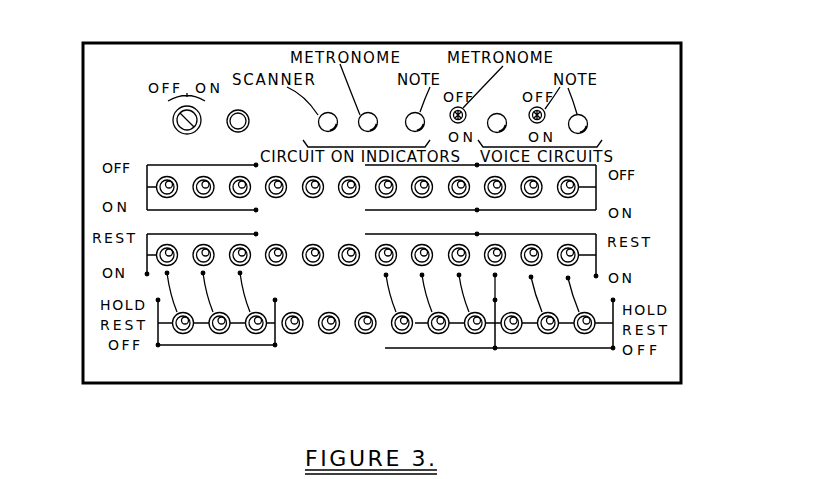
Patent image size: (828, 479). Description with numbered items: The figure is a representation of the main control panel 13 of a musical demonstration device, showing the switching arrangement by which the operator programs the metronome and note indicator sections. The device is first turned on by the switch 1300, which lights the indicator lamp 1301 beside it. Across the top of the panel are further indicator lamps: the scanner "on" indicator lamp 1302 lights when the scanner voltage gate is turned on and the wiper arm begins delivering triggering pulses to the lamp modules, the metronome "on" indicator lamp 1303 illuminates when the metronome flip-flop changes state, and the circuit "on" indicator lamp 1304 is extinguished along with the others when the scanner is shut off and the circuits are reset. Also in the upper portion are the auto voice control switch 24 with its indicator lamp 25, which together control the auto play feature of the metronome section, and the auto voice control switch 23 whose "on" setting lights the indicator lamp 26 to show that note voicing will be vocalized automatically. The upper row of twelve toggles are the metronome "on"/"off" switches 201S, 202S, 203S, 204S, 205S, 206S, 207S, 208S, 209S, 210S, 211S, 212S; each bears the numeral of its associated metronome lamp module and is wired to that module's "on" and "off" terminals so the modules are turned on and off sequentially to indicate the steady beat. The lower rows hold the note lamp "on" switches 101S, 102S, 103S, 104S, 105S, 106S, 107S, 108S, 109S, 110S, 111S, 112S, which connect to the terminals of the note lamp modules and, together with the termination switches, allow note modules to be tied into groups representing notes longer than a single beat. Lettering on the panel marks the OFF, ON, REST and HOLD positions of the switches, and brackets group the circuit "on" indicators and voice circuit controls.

The main control panel 13 is at (681, 153).
The switch 1300 is at (186, 104).
The indicator lamp 1301 is at (235, 110).
The scanner "on" indicator lamp 1302 is at (318, 120).
The metronome "on" indicator lamp 1303 is at (359, 116).
The circuit "on" indicator lamp 1304 is at (418, 112).
The auto voice control switch 23 is at (546, 108).
The auto voice control switch 24 is at (466, 112).
The indicator lamp 25 is at (500, 114).
The indicator lamp 26 is at (585, 117).
The metronome "on"/"off" switch 201S is at (157, 187).
The metronome "on"/"off" switch 202S is at (195, 178).
The metronome "on"/"off" switch 203S is at (236, 177).
The metronome "on"/"off" switch 204S is at (278, 198).
The metronome "on"/"off" switch 205S is at (311, 177).
The metronome "on"/"off" switch 206S is at (353, 198).
The metronome "on"/"off" switch 207S is at (395, 197).
The metronome "on"/"off" switch 208S is at (415, 180).
The metronome "on"/"off" switch 209S is at (463, 197).
The metronome "on"/"off" switch 210S is at (500, 197).
The metronome "on"/"off" switch 211S is at (527, 197).
The metronome "on"/"off" switch 212S is at (578, 187).
The note lamp "on" switch 101S is at (157, 255).
The note lamp "on" switch 102S is at (200, 245).
The note lamp "on" switch 103S is at (243, 246).
The note lamp "on" switch 104S is at (272, 265).
The note lamp "on" switch 105S is at (306, 265).
The note lamp "on" switch 106S is at (343, 264).
The note lamp "on" switch 107S is at (383, 265).
The note lamp "on" switch 108S is at (420, 265).
The note lamp "on" switch 109S is at (455, 265).
The note lamp "on" switch 110S is at (492, 265).
The note lamp "on" switch 111S is at (537, 264).
The note lamp "on" switch 112S is at (578, 255).